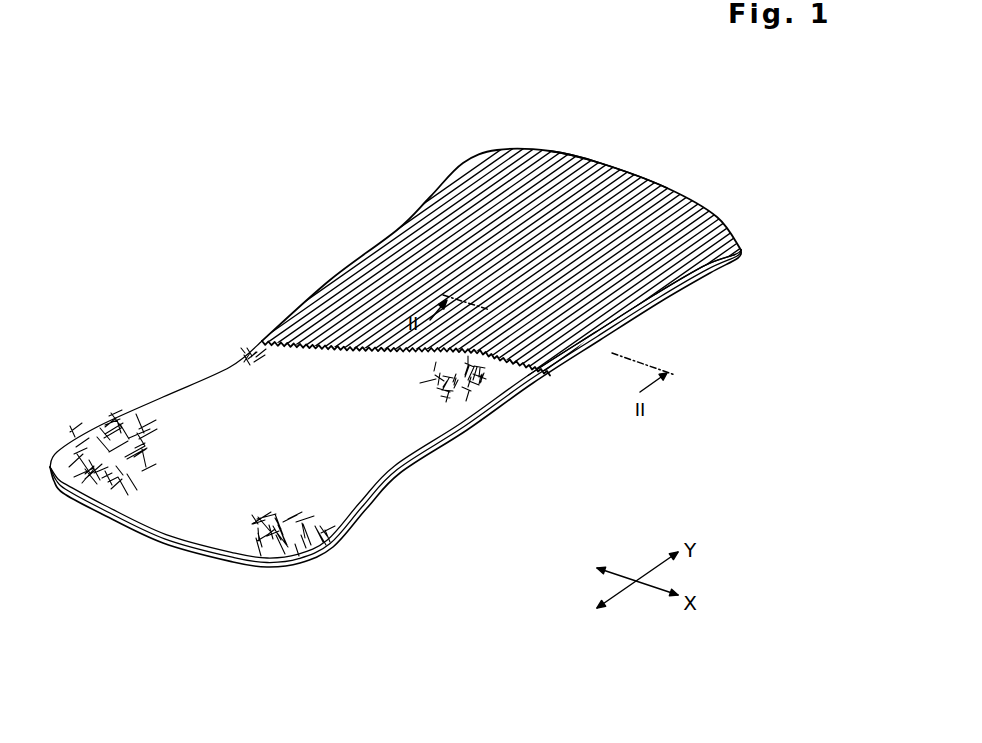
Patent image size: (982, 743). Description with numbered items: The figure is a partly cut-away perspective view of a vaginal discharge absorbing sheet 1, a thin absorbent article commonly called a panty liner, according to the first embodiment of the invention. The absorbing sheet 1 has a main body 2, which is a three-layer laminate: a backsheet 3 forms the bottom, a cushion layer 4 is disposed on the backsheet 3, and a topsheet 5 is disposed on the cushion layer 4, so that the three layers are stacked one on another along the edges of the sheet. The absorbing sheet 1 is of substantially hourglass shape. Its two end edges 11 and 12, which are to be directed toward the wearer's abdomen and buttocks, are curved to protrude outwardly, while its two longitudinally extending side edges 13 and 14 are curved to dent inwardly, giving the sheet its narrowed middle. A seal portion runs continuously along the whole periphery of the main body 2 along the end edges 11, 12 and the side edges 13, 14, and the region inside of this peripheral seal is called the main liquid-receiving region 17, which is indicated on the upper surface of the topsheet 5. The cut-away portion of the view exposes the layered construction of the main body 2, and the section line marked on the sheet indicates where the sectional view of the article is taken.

The vaginal discharge absorbing sheet 1 is at (391, 205).
The main body 2 is at (555, 378).
The backsheet 3 is at (312, 570).
The cushion layer 4 is at (385, 465).
The topsheet 5 is at (620, 173).
The end edge 11 is at (500, 371).
The end edge 12 is at (162, 550).
The side edge 13 is at (273, 331).
The side edge 14 is at (489, 409).
The main liquid-receiving region 17 is at (524, 243).